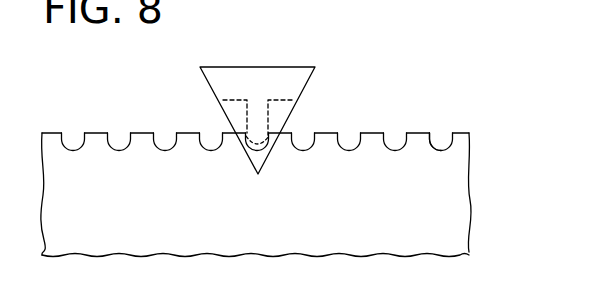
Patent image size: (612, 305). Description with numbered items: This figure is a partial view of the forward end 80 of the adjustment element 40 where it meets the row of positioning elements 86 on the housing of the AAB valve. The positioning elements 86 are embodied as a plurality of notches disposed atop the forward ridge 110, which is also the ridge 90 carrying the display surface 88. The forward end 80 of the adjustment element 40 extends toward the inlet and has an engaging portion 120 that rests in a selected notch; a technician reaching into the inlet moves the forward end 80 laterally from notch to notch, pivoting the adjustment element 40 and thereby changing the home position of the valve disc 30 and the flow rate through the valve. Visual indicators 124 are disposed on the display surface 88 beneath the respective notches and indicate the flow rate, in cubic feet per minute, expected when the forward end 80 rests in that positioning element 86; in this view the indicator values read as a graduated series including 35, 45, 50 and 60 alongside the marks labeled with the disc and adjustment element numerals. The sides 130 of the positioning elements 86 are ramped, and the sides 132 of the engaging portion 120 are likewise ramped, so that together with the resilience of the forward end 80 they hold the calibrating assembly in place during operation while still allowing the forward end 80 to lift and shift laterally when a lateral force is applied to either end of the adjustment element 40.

The valve disc 30 is at (73, 150).
The second groove 35 is at (119, 150).
The adjustment element 40 is at (165, 150).
The fourth groove 45 is at (257, 150).
The fifth groove 50 is at (349, 150).
The sixth groove 60 is at (441, 150).
The forward end 80 is at (254, 67).
The positioning elements 86 is at (394, 150).
The display surface 88 is at (326, 128).
The ridge 90 is at (326, 128).
The forward ridge 110 is at (448, 228).
The engaging portion 120 is at (268, 118).
The visual indicators 124 is at (279, 225).
The sides of the positioning elements 130 is at (434, 147).
The sides of the engaging portion 132 is at (251, 153).